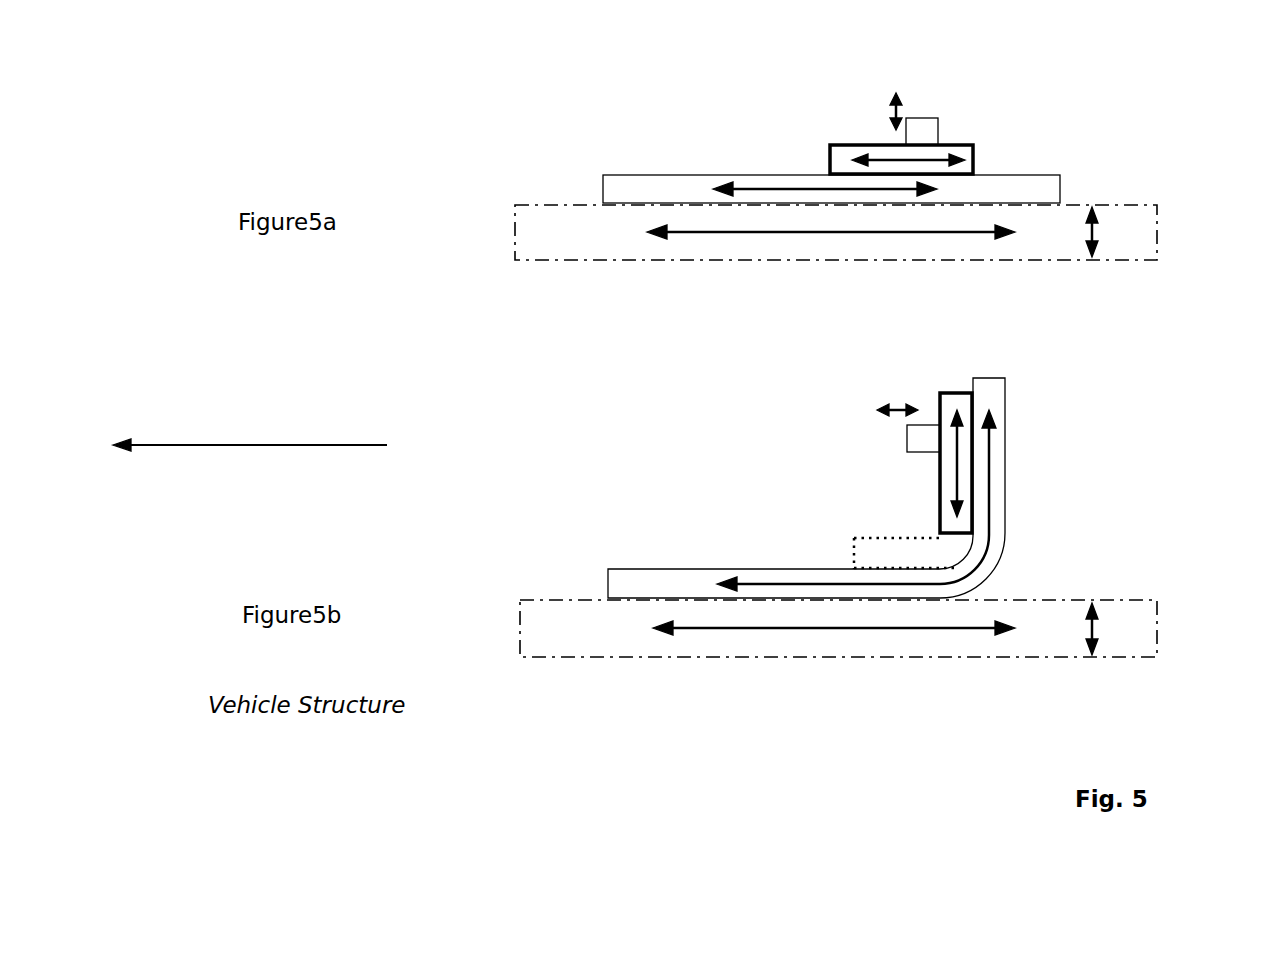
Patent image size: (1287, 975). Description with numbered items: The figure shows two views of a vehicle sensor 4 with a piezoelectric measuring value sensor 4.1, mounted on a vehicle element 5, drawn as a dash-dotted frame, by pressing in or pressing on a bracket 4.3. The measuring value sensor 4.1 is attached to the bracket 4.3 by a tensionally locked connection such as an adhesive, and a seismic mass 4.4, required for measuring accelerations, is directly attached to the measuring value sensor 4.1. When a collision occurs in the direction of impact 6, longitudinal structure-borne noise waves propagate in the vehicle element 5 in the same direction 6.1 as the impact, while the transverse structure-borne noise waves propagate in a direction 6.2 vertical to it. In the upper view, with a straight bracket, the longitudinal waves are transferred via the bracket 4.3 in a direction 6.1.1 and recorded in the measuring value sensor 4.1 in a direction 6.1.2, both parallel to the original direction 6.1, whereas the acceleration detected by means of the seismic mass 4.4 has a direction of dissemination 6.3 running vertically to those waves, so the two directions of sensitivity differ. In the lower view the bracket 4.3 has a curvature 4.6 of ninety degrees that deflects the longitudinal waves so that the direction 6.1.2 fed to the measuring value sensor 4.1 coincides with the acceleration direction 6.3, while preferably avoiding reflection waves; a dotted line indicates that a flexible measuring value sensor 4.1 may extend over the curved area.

In FIG. 5A, the vehicle sensor 4 is at (490, 135).
In FIG. 5B, the vehicle sensor 4 is at (580, 543).
In FIG. 5A, the measuring value sensor 4.1 is at (840, 142).
In FIG. 5B, the measuring value sensor 4.1 is at (938, 480).
In FIG. 5A, the bracket 4.3 is at (625, 172).
In FIG. 5B, the bracket 4.3 is at (683, 567).
In FIG. 5A, the seismic mass 4.4 is at (940, 132).
In FIG. 5B, the seismic mass 4.4 is at (905, 433).
In FIG. 5B, the curvature of the bracket 4.6 is at (987, 568).
In FIG. 5A, the vehicle element 5 is at (515, 262).
In FIG. 5B, the vehicle element 5 is at (518, 657).
In FIG. 5, the direction of impact 6 is at (195, 448).
In FIG. 5A, the direction of dissemination of longitudinal structure-borne noise waves 6.1 is at (720, 234).
In FIG. 5B, the direction of dissemination of longitudinal structure-borne noise waves 6.1 is at (725, 630).
In FIG. 5A, the direction of dissemination of longitudinal structure-borne noise waves in the br 6.1.1 is at (770, 188).
In FIG. 5B, the direction of dissemination of longitudinal structure-borne noise waves in the br 6.1.1 is at (757, 583).
In FIG. 5A, the direction of dissemination of longitudinal structure-borne noise waves in the me 6.1.2 is at (960, 160).
In FIG. 5B, the direction of dissemination of longitudinal structure-borne noise waves in the me 6.1.2 is at (955, 468).
In FIG. 5A, the direction of dissemination of transverse structure-borne noise waves 6.2 is at (1100, 250).
In FIG. 5B, the direction of dissemination of transverse structure-borne noise waves 6.2 is at (1100, 643).
In FIG. 5A, the direction of dissemination of the acceleration 6.3 is at (905, 92).
In FIG. 5B, the direction of dissemination of the acceleration 6.3 is at (900, 392).